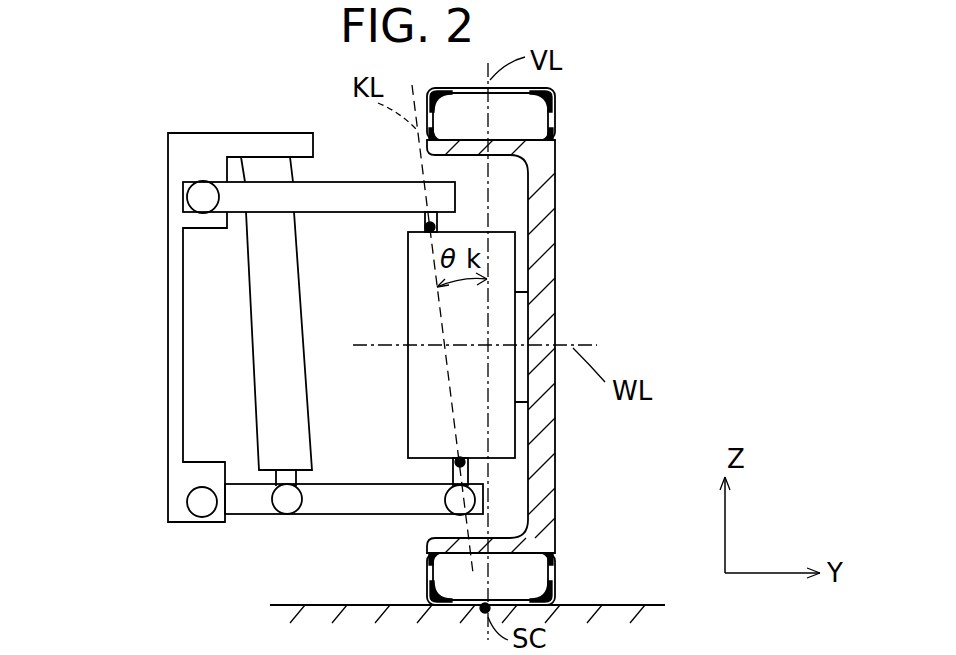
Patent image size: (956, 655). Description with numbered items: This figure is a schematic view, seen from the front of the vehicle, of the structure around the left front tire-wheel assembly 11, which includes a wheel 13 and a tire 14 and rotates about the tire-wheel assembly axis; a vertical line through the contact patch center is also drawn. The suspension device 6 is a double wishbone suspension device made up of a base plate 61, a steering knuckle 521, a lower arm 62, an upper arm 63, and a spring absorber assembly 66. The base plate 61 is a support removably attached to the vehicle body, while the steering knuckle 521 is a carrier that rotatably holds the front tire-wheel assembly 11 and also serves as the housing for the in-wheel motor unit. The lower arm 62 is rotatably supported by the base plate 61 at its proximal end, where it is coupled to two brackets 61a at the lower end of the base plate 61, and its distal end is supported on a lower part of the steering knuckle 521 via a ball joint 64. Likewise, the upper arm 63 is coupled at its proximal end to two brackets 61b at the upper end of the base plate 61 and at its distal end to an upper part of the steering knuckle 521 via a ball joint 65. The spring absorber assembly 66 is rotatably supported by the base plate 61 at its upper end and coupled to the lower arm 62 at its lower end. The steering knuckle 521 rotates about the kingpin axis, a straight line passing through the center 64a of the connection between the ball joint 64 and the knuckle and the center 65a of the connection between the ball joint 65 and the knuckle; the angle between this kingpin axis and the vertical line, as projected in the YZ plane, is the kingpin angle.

The suspension device 6 is at (274, 322).
The front tire-wheel assembly 11 is at (550, 337).
The wheel 13 is at (555, 213).
The tire 14 is at (555, 112).
The steering knuckle 521 is at (507, 268).
The base plate 61 is at (168, 250).
The brackets 61a is at (193, 525).
The brackets 61b is at (187, 175).
The lower arm 62 is at (353, 502).
The upper arm 63 is at (340, 192).
The ball joint 64 is at (452, 477).
The center of the connection portion 64a is at (460, 458).
The ball joint 65 is at (423, 220).
The center of the connection portion 65a is at (427, 237).
The spring absorber assembly 66 is at (267, 322).